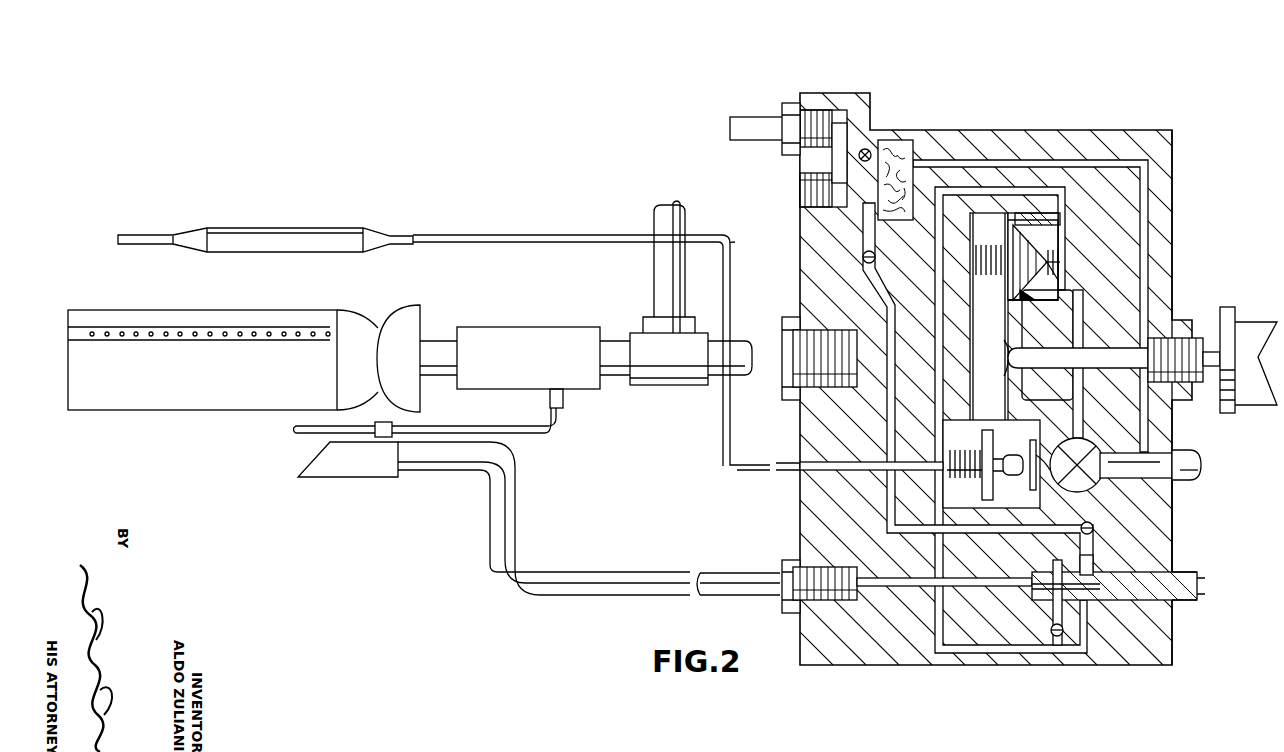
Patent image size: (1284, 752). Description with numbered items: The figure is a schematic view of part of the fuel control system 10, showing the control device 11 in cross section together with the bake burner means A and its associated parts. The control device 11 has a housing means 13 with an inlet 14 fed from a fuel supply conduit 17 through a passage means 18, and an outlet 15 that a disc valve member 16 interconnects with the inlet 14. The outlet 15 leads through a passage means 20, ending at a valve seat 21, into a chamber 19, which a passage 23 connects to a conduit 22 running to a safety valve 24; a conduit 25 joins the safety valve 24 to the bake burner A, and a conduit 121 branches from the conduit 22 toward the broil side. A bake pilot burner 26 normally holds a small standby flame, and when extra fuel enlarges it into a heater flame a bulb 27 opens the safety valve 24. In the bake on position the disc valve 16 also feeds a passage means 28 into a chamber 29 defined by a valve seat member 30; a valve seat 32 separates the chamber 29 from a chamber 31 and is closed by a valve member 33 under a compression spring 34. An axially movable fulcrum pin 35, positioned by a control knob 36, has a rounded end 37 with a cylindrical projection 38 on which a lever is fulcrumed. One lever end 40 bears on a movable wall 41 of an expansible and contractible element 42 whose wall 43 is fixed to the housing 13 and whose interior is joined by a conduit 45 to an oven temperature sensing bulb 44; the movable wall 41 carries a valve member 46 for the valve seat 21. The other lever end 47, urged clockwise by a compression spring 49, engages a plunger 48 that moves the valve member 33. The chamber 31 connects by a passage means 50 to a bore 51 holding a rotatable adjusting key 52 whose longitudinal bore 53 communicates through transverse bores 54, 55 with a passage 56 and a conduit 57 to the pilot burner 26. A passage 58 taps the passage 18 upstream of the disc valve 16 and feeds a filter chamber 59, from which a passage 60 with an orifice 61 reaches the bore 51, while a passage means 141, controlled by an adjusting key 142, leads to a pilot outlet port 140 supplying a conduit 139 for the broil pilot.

The control system 10 is at (610, 127).
The control device 11 is at (1032, 122).
The housing means 13 is at (806, 427).
The inlet 14 is at (1106, 482).
The outlet 15 is at (1037, 446).
The disc valve member 16 is at (1140, 430).
The fuel supply conduit 17 is at (1200, 464).
The passage means 18 is at (1172, 512).
The chamber 19 is at (1033, 400).
The passage means 20 is at (1068, 490).
The valve seat 21 is at (1026, 455).
The conduit 22 is at (722, 378).
The passage 23 is at (870, 385).
The safety valve 24 is at (530, 328).
The conduit 25 is at (440, 341).
The bake pilot burner 26 is at (348, 478).
The bulb 27 is at (300, 436).
The passage means 28 is at (1076, 324).
The chamber 29 is at (1030, 300).
The valve seat member 30 is at (1010, 298).
The chamber 31 is at (1062, 284).
The valve seat 32 is at (1052, 212).
The valve member 33 is at (1060, 264).
The compression spring 34 is at (1058, 256).
The fulcrum pin 35 is at (1104, 358).
The control knob 36 is at (1243, 330).
The rounded end 37 is at (1006, 348).
The cylindrical projection 38 is at (1004, 374).
The lever end 40 is at (1004, 412).
The movable wall 41 is at (1003, 476).
The expansible and contractible element 42 is at (982, 445).
The fixed wall 43 is at (976, 480).
The oven temperature sensing bulb 44 is at (296, 226).
The conduit 45 is at (540, 232).
The valve member 46 is at (1048, 490).
The lever end 47 is at (1012, 228).
The plunger 48 is at (1016, 245).
The compression spring 49 is at (976, 265).
The passage means 50 is at (936, 288).
The bore 51 is at (1148, 604).
The adjusting key 52 is at (1178, 574).
The longitudinal bore 53 is at (1040, 598).
The transverse bore 54 is at (1080, 620).
The transverse bore 55 is at (1060, 555).
The passage 56 is at (901, 562).
The conduit 57 is at (646, 578).
The passage 58 is at (1172, 200).
The filter chamber 59 is at (906, 142).
The passage 60 is at (888, 434).
The orifice 61 is at (862, 250).
The conduit 121 is at (658, 272).
The conduit 139 is at (770, 120).
The pilot outlet port 140 is at (828, 108).
The passage means 141 is at (860, 140).
The adjusting key 142 is at (870, 148).
The bake burner means A is at (146, 412).